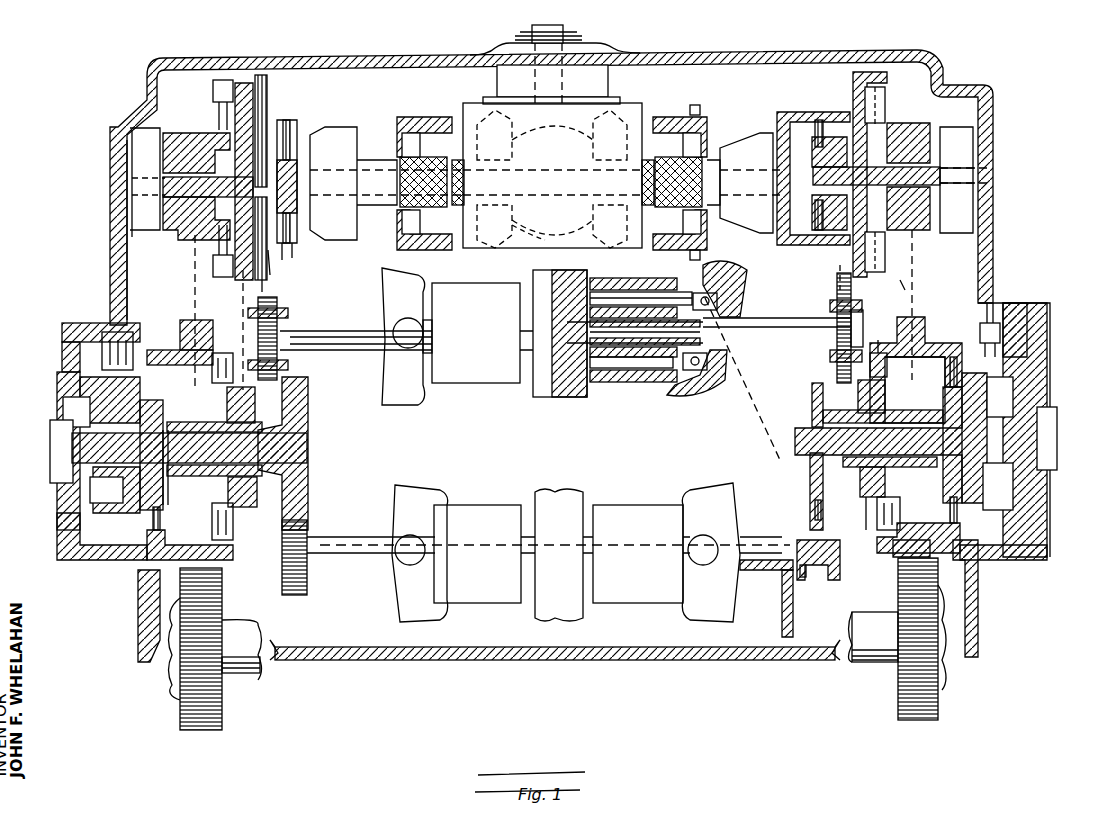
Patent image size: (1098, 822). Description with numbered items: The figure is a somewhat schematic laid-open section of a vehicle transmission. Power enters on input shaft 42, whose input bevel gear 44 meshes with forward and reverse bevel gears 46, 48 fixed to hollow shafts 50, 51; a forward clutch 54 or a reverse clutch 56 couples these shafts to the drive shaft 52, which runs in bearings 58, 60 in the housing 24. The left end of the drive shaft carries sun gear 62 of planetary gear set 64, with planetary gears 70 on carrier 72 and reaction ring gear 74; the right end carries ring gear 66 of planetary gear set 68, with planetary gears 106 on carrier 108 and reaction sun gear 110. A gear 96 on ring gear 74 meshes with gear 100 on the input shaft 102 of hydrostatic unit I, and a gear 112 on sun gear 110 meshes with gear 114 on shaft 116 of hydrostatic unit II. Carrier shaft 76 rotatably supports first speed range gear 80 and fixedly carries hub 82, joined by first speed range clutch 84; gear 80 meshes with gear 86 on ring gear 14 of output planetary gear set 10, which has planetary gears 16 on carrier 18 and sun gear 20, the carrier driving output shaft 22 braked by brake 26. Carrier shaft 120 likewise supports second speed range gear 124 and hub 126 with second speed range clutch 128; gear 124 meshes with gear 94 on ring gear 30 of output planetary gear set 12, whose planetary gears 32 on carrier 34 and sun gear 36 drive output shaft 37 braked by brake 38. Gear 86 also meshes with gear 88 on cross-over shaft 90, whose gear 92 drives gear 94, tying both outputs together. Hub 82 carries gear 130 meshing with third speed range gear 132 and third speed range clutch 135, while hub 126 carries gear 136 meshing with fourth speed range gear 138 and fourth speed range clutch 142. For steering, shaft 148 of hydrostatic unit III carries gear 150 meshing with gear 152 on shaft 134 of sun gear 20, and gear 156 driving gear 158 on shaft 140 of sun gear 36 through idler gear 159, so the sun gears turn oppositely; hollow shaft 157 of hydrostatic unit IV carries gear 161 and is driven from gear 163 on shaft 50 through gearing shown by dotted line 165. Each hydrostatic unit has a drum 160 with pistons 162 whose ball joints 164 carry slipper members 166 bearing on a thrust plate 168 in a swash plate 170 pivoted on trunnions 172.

The output planetary gear set 10 is at (50, 412).
The output planetary gear set 12 is at (1045, 380).
The ring gear 14 is at (155, 570).
The planetary gears 16 is at (162, 522).
The carrier 18 is at (170, 493).
The sun gear 20 is at (165, 410).
The output shaft 22 is at (52, 440).
The housing 24 is at (118, 278).
The brake 26 is at (133, 345).
The ring gear 30 is at (945, 348).
The planetary gears 32 is at (945, 518).
The carrier 34 is at (922, 510).
The sun gear 36 is at (955, 400).
The output shaft 37 is at (1057, 420).
The brake 38 is at (977, 333).
The input shaft 42 is at (565, 30).
The input bevel gear 44 is at (580, 135).
The forward bevel gear 46 is at (585, 232).
The reverse bevel gear 48 is at (516, 215).
The hollow rotatable shaft 50 is at (648, 160).
The hollow rotatable shaft 51 is at (460, 160).
The drive shaft 52 is at (540, 217).
The forward clutch 54 is at (695, 140).
The reverse clutch 56 is at (395, 148).
The bearing 58 is at (398, 238).
The bearing 60 is at (752, 215).
The sun gear 62 is at (296, 150).
The planetary gear set 64 is at (290, 115).
The ring gear 66 is at (805, 125).
The planetary gear set 68 is at (790, 110).
The planetary gears 70 is at (296, 243).
The carrier 72 is at (270, 283).
The ring gear 74 is at (290, 262).
The carrier shaft 76 is at (190, 150).
The first speed range gear 80 is at (180, 125).
The hub 82 is at (210, 214).
The first speed range clutch 84 is at (218, 258).
The gear 86 is at (190, 320).
The gear 88 is at (205, 730).
The cross-over shaft 90 is at (240, 675).
The gear 92 is at (920, 720).
The gear 94 is at (893, 548).
The gear 96 is at (268, 85).
The gear 100 is at (285, 305).
The input shaft 102 is at (316, 350).
The planetary gears 106 is at (826, 135).
The carrier 108 is at (815, 240).
The sun gear 110 is at (840, 240).
The gear 112 is at (835, 275).
The gear 114 is at (836, 298).
The shaft 116 is at (798, 328).
The carrier shaft 120 is at (958, 185).
The second speed range gear 124 is at (880, 150).
The hub 126 is at (885, 200).
The second speed range clutch 128 is at (885, 110).
The gear 130 is at (250, 307).
The third speed range gear 132 is at (243, 508).
The shaft 134 is at (295, 425).
The third speed range clutch 135 is at (212, 368).
The gear 136 is at (870, 275).
The fourth speed range gear 138 is at (866, 497).
The shaft 140 is at (795, 440).
The fourth speed range clutch 142 is at (878, 380).
The shaft 148 is at (350, 525).
The gear 150 is at (295, 597).
The gear 152 is at (308, 487).
The gear 156 is at (813, 582).
The hollow shaft 157 is at (780, 572).
The gear 158 is at (812, 388).
The idler gear 159 is at (810, 497).
The drum 160 is at (583, 397).
The gear 161 is at (792, 605).
The pistons 162 is at (640, 285).
The gear 163 is at (696, 105).
The ball joint 164 is at (700, 292).
The dotted line 165 is at (750, 395).
The slipper member 166 is at (668, 385).
The thrust plate 168 is at (690, 398).
The swash plate 170 is at (745, 288).
The trunnions 172 is at (385, 320).
The hydrostatic unit I is at (460, 383).
The hydrostatic unit II is at (610, 382).
The hydrostatic unit III is at (458, 603).
The hydrostatic unit IV is at (618, 603).